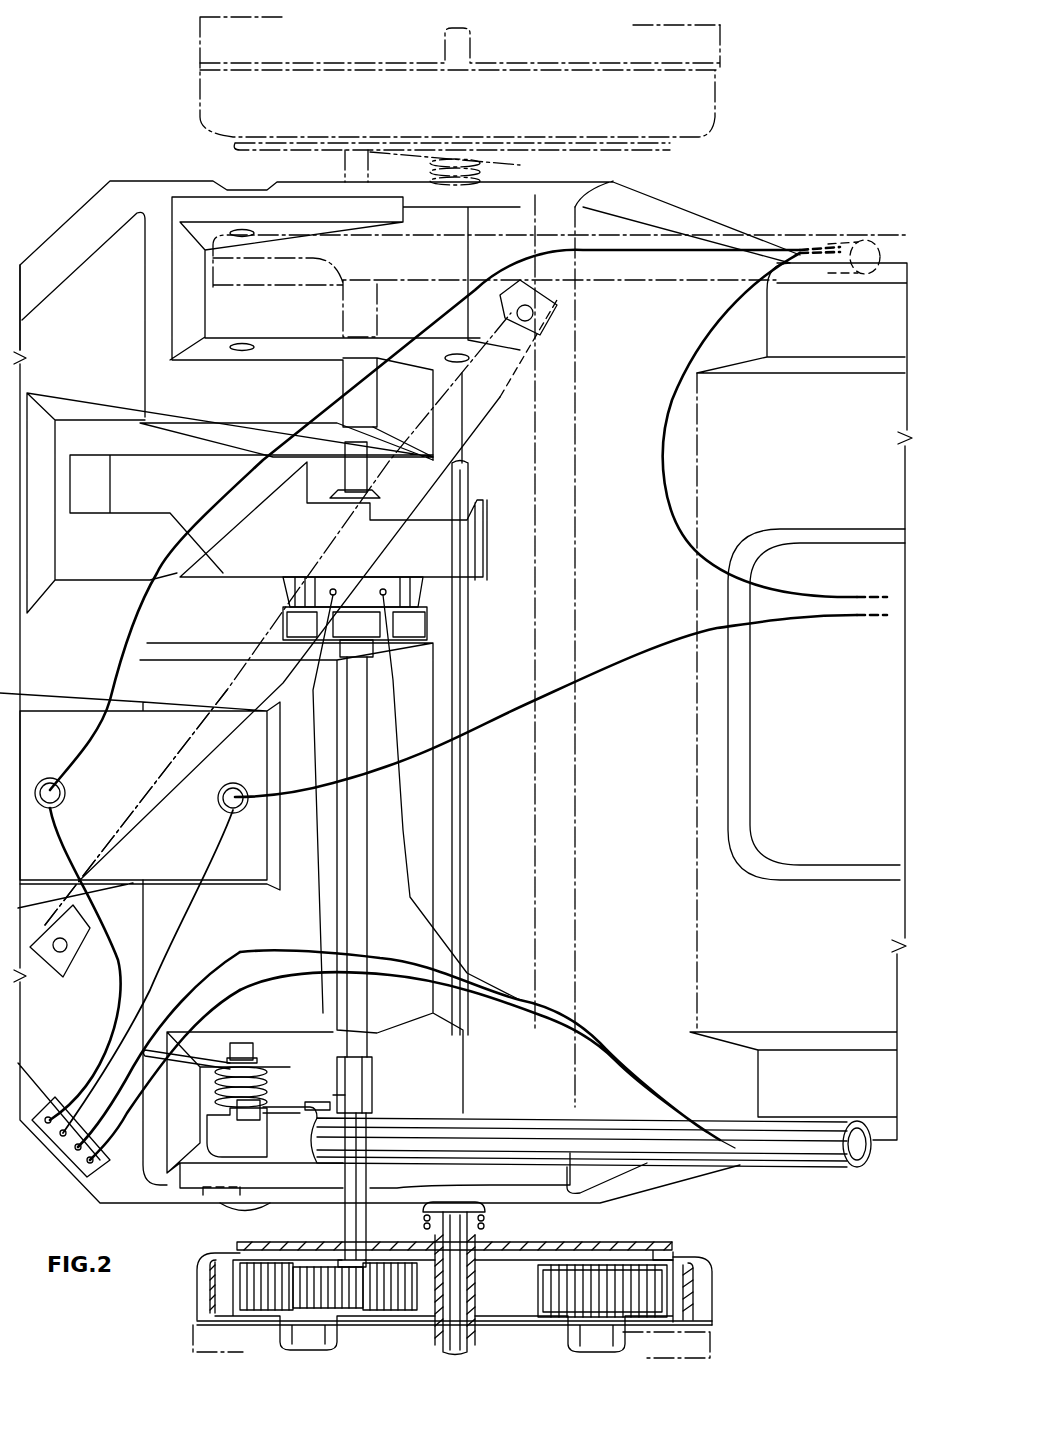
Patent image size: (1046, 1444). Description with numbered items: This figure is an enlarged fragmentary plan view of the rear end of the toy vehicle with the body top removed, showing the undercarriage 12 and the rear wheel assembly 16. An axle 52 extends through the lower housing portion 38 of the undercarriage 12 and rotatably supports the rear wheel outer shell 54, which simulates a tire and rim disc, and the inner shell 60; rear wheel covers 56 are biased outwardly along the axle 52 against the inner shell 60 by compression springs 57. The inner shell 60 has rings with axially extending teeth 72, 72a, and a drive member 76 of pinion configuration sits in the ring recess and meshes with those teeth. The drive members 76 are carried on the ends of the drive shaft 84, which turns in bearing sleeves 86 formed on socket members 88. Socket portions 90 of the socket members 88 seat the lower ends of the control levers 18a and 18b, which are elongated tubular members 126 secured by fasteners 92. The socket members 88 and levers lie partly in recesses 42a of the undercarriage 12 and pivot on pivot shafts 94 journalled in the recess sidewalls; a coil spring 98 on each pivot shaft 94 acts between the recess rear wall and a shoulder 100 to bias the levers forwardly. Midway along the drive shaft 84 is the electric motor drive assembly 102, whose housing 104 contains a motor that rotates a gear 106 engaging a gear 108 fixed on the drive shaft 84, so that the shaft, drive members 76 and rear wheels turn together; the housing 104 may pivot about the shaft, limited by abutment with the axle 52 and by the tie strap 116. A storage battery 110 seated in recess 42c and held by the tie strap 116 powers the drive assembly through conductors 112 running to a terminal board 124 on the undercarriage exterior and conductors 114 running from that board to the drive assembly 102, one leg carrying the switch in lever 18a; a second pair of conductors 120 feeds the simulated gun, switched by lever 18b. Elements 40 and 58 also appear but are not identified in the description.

The undercarriage 12 is at (684, 202).
The rear wheel assembly 16 is at (722, 1298).
The control lever 18a is at (840, 1172).
The control lever 18b is at (848, 232).
The housing portion 38 is at (316, 956).
The housing wall 40 is at (82, 285).
The recesses 42a is at (190, 285).
The recess 42c is at (85, 580).
The axle 52 is at (460, 818).
The rear wheel outer shell 54 is at (735, 52).
The rear wheel covers 56 is at (258, 152).
The compression springs 57 is at (488, 168).
The cover 58 is at (200, 40).
The inner shell 60 is at (716, 118).
The teeth 72 is at (535, 1280).
The axially extending teeth 72a is at (243, 1288).
The drive members 76 is at (377, 1288).
The drive shaft 84 is at (348, 476).
The bearing sleeves 86 is at (372, 1095).
The socket members 88 is at (332, 1095).
The socket portions 90 is at (293, 1122).
The fasteners 92 is at (312, 1105).
The pivot shafts 94 is at (238, 1040).
The coil spring 98 is at (215, 1084).
The shoulder 100 is at (245, 1122).
The electric motor drive assembly 102 is at (135, 540).
The housing 104 is at (272, 525).
The gear 106 is at (285, 587).
The gear 108 is at (282, 618).
The storage battery 110 is at (117, 817).
The conductors 112 is at (175, 923).
The conductors 114 is at (398, 975).
The tie strap 116 is at (150, 787).
The conductors 120 is at (668, 470).
The terminal board 124 is at (65, 1152).
The tubular members 126 is at (790, 1152).